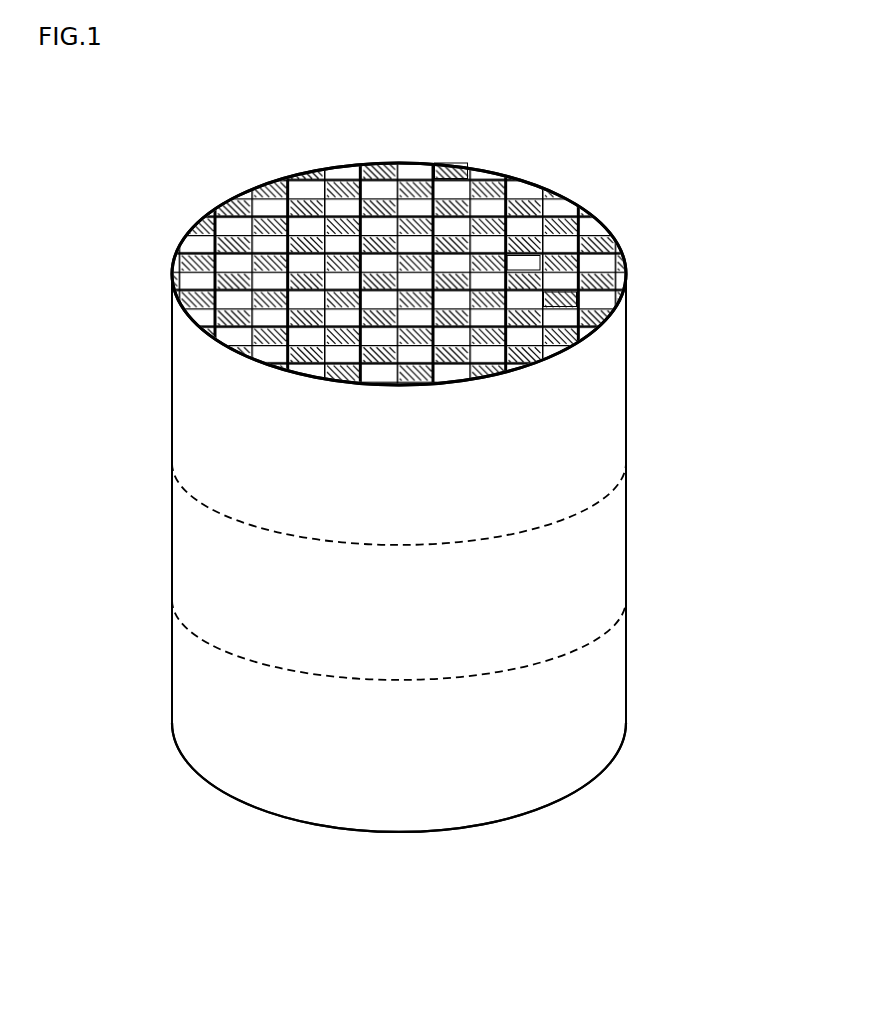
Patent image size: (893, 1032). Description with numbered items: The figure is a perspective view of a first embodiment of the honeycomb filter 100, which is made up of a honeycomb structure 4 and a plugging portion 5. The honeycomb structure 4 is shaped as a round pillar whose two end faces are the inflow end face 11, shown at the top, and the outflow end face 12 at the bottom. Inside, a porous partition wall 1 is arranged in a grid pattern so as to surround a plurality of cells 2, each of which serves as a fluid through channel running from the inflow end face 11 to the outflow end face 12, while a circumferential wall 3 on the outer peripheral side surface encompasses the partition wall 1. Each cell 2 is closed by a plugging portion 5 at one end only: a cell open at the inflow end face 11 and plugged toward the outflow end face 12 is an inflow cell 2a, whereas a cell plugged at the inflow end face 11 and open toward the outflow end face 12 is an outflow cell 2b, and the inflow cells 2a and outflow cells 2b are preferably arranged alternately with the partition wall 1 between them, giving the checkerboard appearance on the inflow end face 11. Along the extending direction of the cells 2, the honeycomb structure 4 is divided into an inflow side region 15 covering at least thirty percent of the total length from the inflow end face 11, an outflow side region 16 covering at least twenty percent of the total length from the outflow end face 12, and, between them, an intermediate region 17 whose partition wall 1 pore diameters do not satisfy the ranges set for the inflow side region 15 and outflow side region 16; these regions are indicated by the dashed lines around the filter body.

The honeycomb filter 100 is at (783, 103).
The partition wall 1 is at (399, 244).
The cell 2 is at (505, 210).
The inflow cell 2a is at (522, 262).
The outflow cell 2b is at (560, 294).
The circumferential wall 3 is at (588, 428).
The honeycomb structure 4 is at (648, 321).
The plugging portion 5 is at (432, 180).
The inflow end face 11 is at (251, 174).
The outflow end face 12 is at (197, 802).
The inflow side region 15 is at (204, 420).
The outflow side region 16 is at (207, 689).
The intermediate region 17 is at (204, 557).